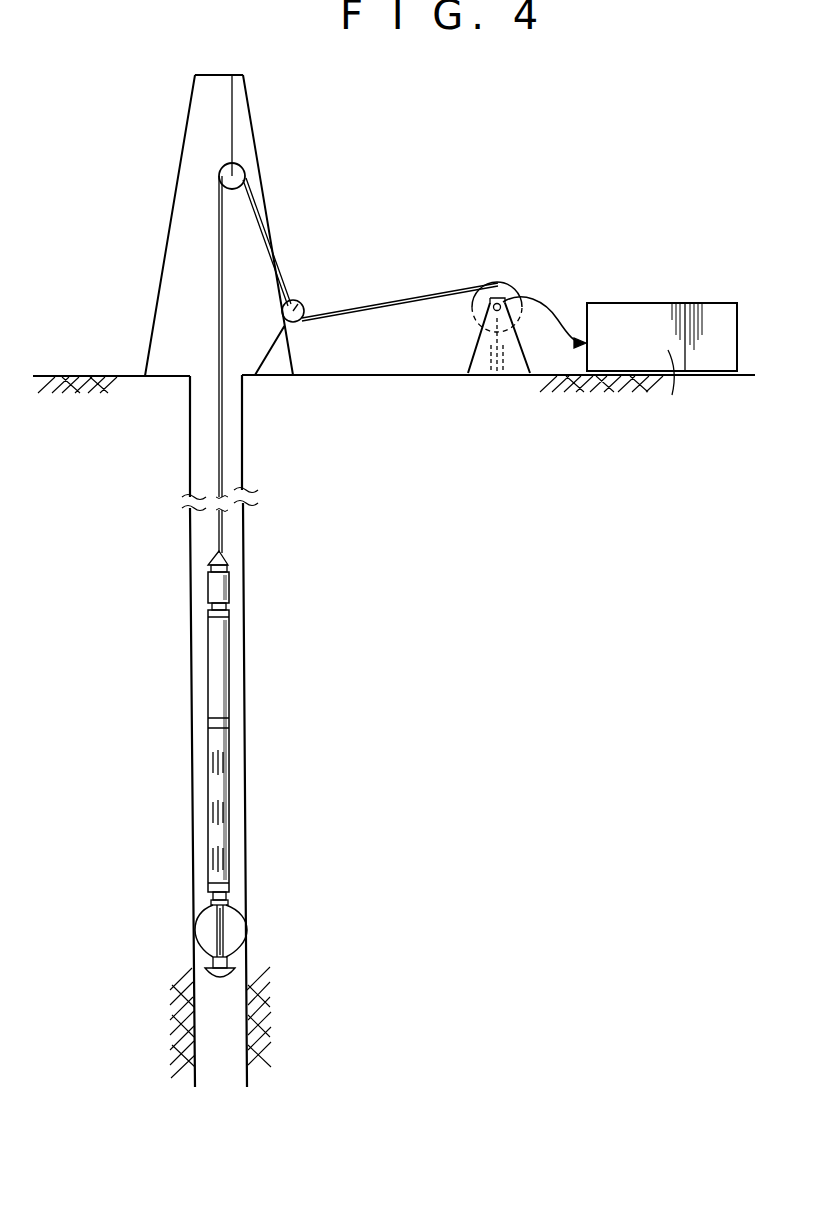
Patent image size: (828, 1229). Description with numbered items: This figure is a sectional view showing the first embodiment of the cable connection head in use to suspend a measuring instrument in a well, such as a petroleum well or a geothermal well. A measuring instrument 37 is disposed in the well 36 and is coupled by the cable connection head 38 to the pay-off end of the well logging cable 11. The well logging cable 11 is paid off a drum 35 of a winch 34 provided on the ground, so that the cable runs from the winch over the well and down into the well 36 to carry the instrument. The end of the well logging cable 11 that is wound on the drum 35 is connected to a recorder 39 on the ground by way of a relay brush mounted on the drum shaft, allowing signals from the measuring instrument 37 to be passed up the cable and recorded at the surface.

The well logging cable 11 is at (341, 305).
The winch 34 is at (475, 333).
The drum 35 is at (501, 282).
The well 36 is at (202, 477).
The measuring instrument 37 is at (214, 697).
The cable connection head 38 is at (212, 590).
The recorder 39 is at (676, 303).